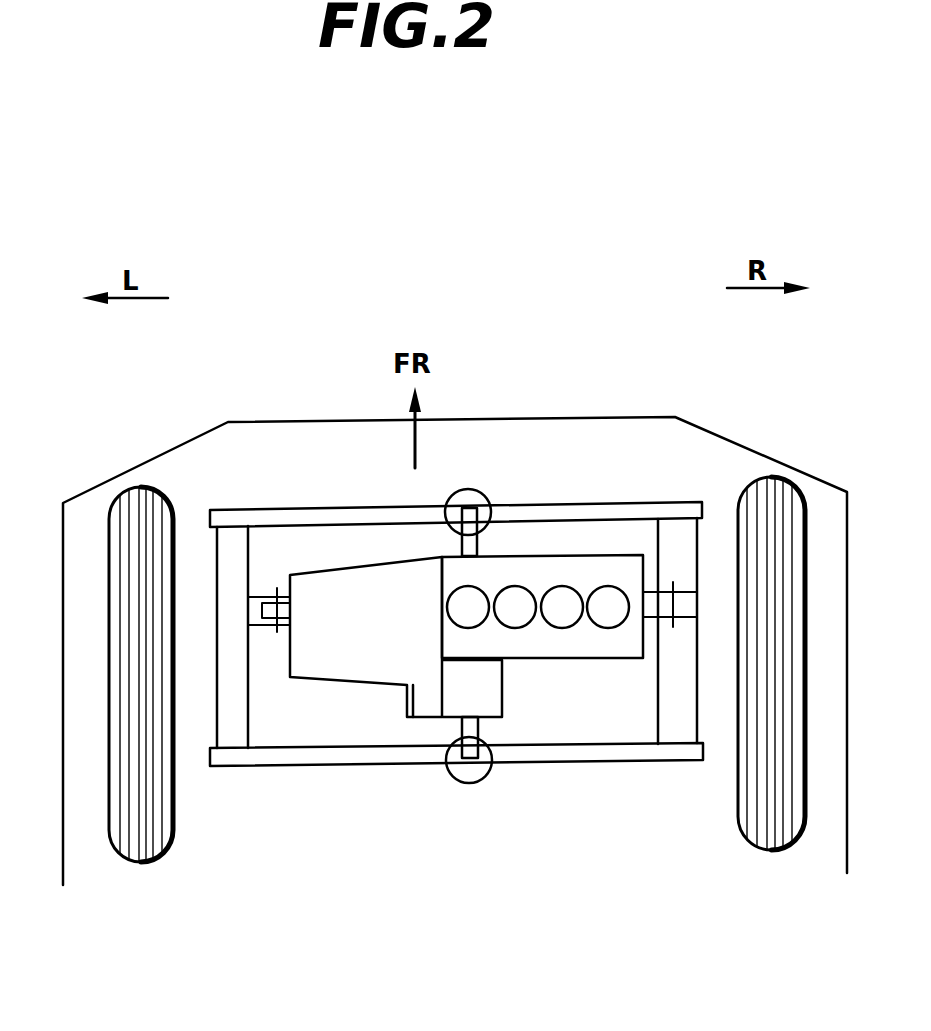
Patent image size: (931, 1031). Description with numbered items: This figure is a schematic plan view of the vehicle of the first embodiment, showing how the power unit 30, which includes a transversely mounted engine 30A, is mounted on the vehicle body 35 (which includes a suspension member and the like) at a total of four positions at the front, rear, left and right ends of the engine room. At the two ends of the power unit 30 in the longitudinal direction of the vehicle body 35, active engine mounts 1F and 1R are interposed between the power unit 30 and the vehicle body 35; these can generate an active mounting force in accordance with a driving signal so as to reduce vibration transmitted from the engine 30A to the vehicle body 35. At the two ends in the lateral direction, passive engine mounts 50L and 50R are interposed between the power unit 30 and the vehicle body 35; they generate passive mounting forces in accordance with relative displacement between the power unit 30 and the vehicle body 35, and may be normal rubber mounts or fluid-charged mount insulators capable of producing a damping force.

The active engine mount 1F is at (468, 488).
The active engine mount 1R is at (468, 782).
The power unit 30 is at (547, 540).
The engine 30A is at (515, 653).
The vehicle body 35 is at (617, 503).
The engine mount 50L is at (272, 610).
The engine mount 50R is at (680, 602).